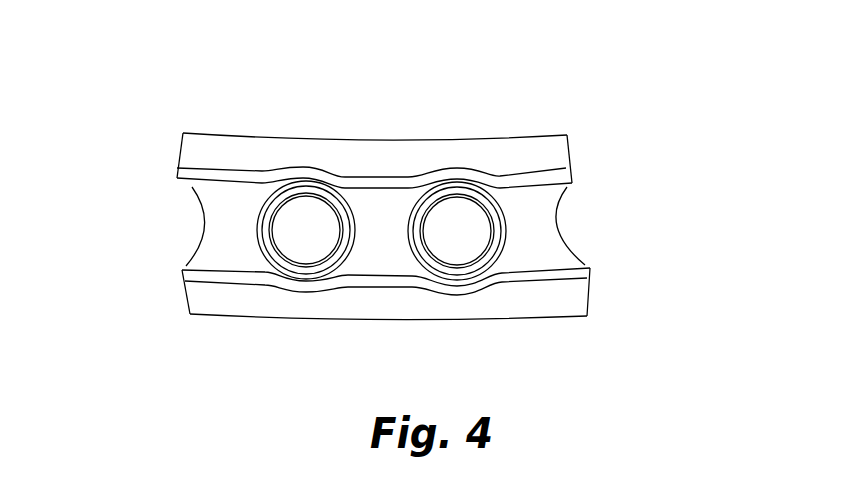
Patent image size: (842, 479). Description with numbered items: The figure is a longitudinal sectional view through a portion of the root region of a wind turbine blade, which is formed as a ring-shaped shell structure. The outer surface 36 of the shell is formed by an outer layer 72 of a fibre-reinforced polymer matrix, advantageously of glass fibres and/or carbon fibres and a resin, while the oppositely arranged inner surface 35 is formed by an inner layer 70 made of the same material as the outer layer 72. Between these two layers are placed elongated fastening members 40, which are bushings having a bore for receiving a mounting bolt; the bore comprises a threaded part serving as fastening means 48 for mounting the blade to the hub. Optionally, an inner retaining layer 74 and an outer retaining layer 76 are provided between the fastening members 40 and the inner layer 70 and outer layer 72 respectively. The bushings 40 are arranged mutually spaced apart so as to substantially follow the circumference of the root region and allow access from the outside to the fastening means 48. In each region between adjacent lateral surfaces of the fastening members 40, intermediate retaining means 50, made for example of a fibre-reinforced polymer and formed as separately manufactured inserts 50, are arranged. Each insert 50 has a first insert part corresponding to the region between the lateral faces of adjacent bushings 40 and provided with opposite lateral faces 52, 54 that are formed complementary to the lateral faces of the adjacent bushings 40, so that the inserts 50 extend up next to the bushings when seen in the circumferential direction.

The inner surface 35 is at (323, 138).
The inner layer 70 is at (215, 148).
The inner retaining layer 74 is at (333, 175).
The intermediate retaining means 50 is at (393, 192).
The elongated fastening member 40 is at (486, 182).
The fastening means 48 is at (497, 274).
The lateral face 54 is at (447, 272).
The lateral face 52 is at (313, 274).
The outer retaining layer 76 is at (212, 276).
The outer layer 72 is at (285, 300).
The outer surface 36 is at (573, 318).